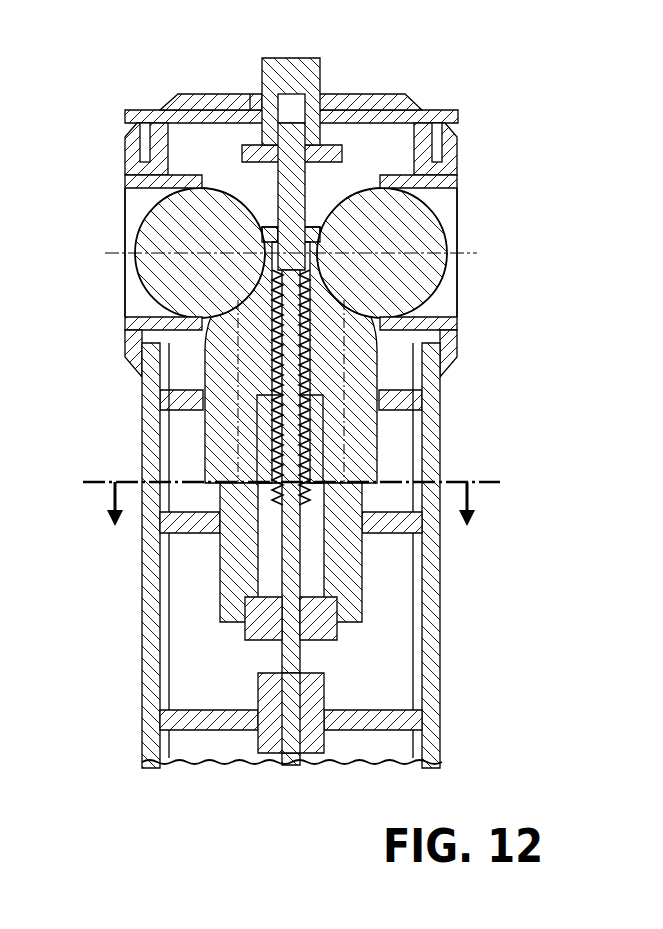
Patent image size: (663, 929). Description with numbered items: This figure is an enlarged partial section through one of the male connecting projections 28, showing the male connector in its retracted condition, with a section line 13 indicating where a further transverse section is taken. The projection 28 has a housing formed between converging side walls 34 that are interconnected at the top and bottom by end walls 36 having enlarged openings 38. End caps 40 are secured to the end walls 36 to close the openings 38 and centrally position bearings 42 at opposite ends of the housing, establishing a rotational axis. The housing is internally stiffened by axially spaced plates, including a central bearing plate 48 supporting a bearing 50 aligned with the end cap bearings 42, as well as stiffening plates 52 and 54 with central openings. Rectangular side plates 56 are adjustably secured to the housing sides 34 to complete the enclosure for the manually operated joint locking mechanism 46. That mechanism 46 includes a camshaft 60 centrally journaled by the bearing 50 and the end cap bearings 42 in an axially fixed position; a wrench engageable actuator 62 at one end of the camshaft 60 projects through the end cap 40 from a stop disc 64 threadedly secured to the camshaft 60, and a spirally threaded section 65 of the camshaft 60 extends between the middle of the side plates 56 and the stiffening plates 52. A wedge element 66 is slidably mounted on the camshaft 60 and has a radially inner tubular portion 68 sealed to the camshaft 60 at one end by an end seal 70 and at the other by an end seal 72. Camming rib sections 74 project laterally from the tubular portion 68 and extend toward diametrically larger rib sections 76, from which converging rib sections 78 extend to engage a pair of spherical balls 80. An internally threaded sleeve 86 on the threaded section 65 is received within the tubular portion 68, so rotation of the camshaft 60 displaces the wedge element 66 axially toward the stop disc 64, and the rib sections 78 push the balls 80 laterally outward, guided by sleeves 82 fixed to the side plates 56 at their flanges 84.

The male connecting projection 28 is at (198, 769).
The side walls 34 is at (437, 440).
The end walls 36 is at (150, 110).
The enlarged openings 38 is at (335, 110).
The end caps 40 is at (213, 94).
The bearings 42 is at (257, 94).
The joint locking mechanism 46 is at (388, 567).
The central bearing plate 48 is at (363, 730).
The bearing 50 is at (315, 693).
The stiffening plate 52 is at (422, 533).
The stiffening plate 54 is at (413, 393).
The side plates 56 is at (458, 145).
The camshaft 60 is at (281, 653).
The wrench engageable actuator 62 is at (325, 70).
The stop disc 64 is at (330, 152).
The spirally threaded section 65 is at (363, 356).
The wedge element 66 is at (385, 427).
The tubular portion 68 is at (237, 542).
The end seal 70 is at (330, 637).
The end seal 72 is at (315, 227).
The camming rib sections 74 is at (220, 610).
The rib sections 76 is at (220, 433).
The converging rib section 78 is at (418, 318).
The spherical balls 80 is at (140, 233).
The sleeves 82 is at (130, 325).
The flanges 84 is at (128, 180).
The internally threaded sleeve 86 is at (263, 455).
The section line 13- 13 is at (291, 482).